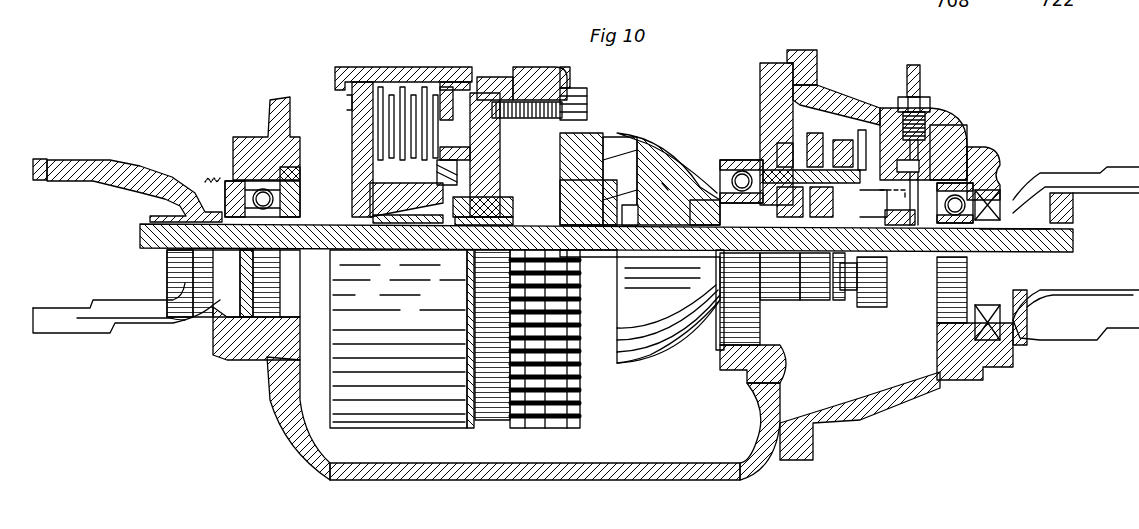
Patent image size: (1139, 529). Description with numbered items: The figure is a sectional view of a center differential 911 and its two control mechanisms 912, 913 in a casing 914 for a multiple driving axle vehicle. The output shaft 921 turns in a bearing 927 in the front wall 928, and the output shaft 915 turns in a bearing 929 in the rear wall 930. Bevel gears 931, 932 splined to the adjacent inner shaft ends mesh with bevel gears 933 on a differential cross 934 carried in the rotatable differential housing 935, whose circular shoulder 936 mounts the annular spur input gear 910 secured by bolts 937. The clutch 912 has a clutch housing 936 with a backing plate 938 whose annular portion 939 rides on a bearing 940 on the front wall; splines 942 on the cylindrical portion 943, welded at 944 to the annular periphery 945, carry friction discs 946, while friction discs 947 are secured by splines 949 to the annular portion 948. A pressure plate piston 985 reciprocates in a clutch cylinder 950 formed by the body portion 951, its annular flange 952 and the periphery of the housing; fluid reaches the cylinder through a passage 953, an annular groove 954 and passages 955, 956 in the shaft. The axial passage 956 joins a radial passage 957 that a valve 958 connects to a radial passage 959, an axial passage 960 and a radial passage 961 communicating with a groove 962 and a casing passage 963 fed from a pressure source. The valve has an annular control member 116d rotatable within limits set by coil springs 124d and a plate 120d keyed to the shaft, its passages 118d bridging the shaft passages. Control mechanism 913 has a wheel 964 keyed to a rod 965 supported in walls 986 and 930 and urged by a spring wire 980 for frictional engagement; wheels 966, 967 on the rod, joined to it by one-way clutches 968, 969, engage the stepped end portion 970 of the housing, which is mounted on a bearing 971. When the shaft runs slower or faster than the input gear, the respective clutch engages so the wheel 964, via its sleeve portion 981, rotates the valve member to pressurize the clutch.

The control mechanism 912 is at (422, 35).
The clutch housing 936 is at (357, 66).
The friction discs 946 is at (399, 88).
The cylindrical portion 943 is at (430, 72).
The splines 942 is at (436, 82).
The weld 944 is at (470, 76).
The annular periphery 945 is at (495, 80).
The input gear 910 is at (572, 80).
The bolts 937 is at (592, 97).
The center differential 911 is at (694, 86).
The casing 914 is at (803, 39).
The wheel 967 is at (836, 115).
The control mechanism 913 is at (840, 130).
The wheel 964 is at (862, 130).
The spring wire 980 is at (919, 80).
The passage 963 is at (917, 150).
The rear wall 930 is at (948, 118).
The wheel 966 is at (766, 78).
The wall 986 is at (766, 133).
The sleeve portion 981 is at (794, 148).
The bearing 971 is at (729, 178).
The plate 120d is at (990, 167).
The bearing 929 is at (980, 200).
The rod 965 is at (919, 168).
The passages 118d is at (906, 192).
The front wall 928 is at (272, 125).
The bearing 927 is at (266, 188).
The backing plate 938 is at (351, 132).
The differential cross 934 is at (606, 160).
The bevel gears 933 is at (640, 170).
The passage 953 is at (665, 185).
The pressure plate piston 985 is at (470, 155).
The splines 949 is at (441, 172).
The friction discs 947 is at (416, 160).
The body portion 951 is at (497, 198).
The bearing 940 is at (316, 200).
The annular portion 939 is at (350, 214).
The output shaft 921 is at (420, 247).
The annular portion 948 is at (429, 222).
The annular flange 952 is at (466, 224).
The clutch cylinder 950 is at (510, 215).
The bevel gear 931 is at (577, 252).
The bevel gear 932 is at (633, 217).
The output shaft 915 is at (676, 245).
The annular groove 954 is at (702, 233).
The differential housing 935 is at (623, 305).
The passage 955 is at (720, 282).
The one-way clutch 968 is at (787, 183).
The one-way clutch 969 is at (823, 183).
The end portion 970 is at (775, 287).
The axial passage 956 is at (805, 265).
The radial passage 957 is at (828, 282).
The control member 116d is at (857, 262).
The valve 958 is at (860, 305).
The radial passage 959 is at (870, 258).
The axial passage 960 is at (880, 232).
The radial passage 961 is at (897, 225).
The groove 962 is at (915, 222).
The coil springs 124d is at (900, 260).